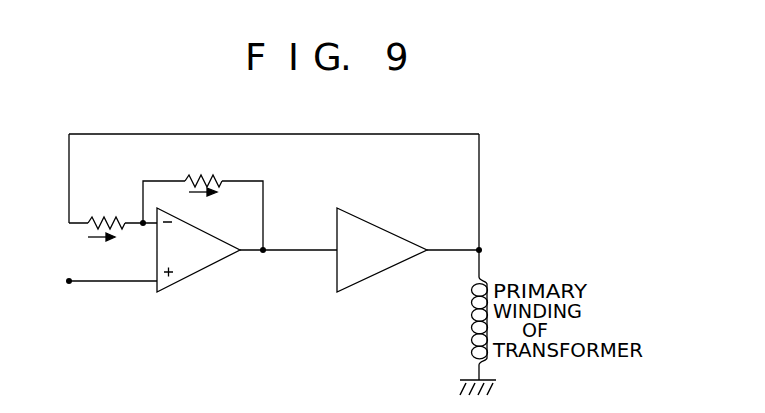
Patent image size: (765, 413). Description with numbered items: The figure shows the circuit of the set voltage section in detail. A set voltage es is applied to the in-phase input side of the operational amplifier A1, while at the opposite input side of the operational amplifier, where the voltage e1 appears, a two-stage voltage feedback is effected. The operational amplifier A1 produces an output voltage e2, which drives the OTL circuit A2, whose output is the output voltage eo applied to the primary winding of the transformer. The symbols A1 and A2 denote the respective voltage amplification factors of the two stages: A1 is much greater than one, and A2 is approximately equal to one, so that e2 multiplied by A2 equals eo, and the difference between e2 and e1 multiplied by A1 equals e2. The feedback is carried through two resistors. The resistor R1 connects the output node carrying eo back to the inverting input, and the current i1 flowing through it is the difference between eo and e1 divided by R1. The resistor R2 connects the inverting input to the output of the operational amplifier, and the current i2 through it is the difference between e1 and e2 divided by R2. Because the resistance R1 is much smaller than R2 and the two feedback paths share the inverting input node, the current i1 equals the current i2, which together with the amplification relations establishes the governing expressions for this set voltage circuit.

The input resistor R1 is at (106, 212).
The feedback resistor R2 is at (203, 171).
The operational amplifier A1 is at (220, 272).
The OTL circuit A2 is at (385, 274).
The inverting input voltage e1 is at (140, 238).
The operational amplifier output voltage e2 is at (268, 266).
The output voltage eo is at (502, 255).
The set voltage es is at (60, 306).
The first feedback current i1 is at (101, 250).
The second feedback current i2 is at (203, 204).